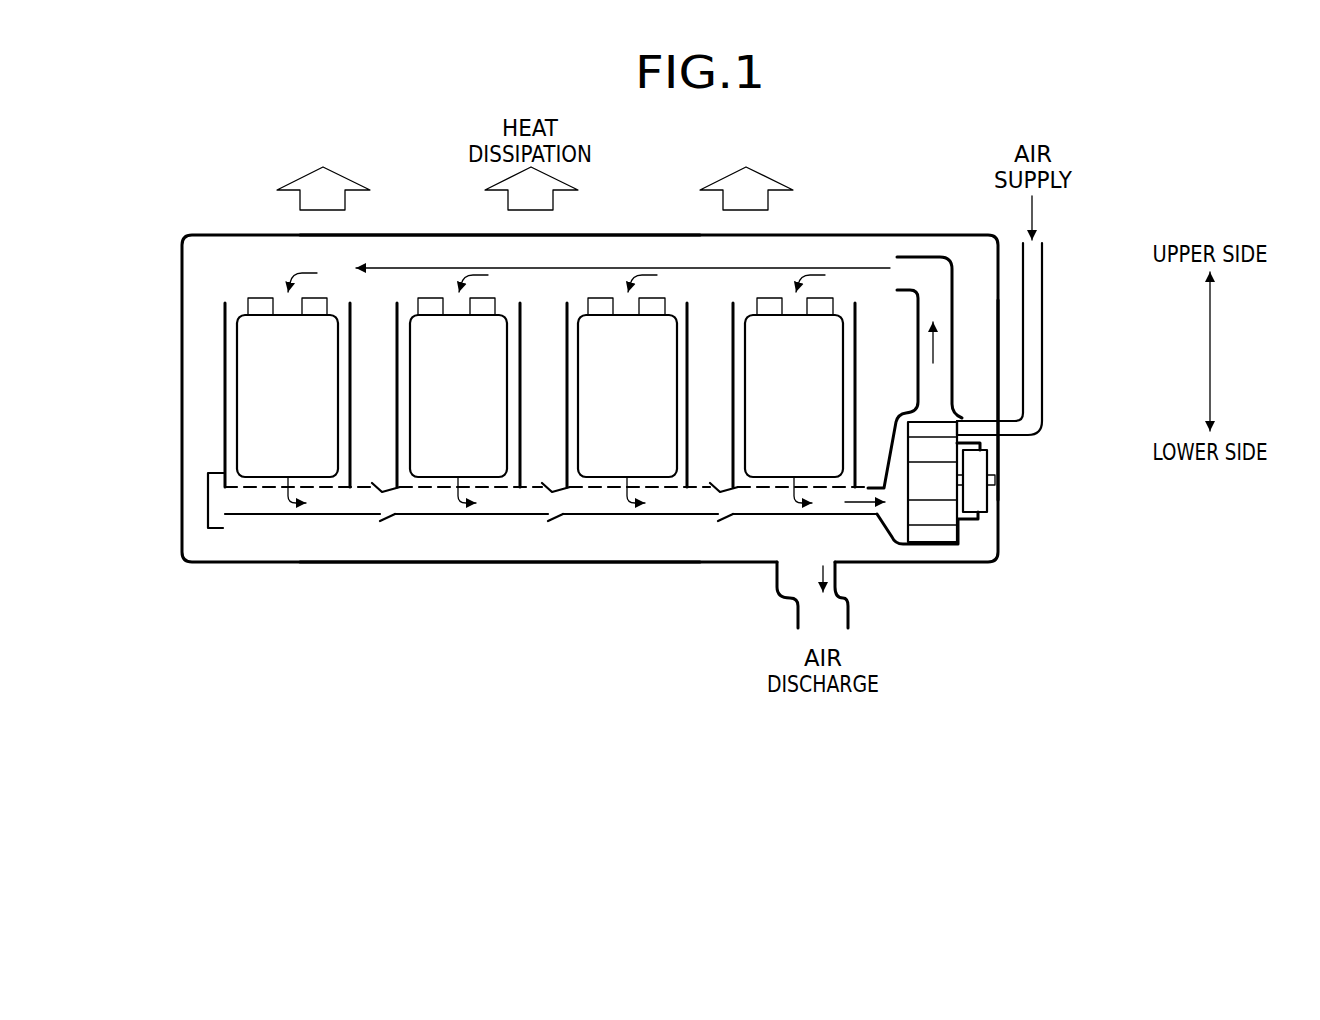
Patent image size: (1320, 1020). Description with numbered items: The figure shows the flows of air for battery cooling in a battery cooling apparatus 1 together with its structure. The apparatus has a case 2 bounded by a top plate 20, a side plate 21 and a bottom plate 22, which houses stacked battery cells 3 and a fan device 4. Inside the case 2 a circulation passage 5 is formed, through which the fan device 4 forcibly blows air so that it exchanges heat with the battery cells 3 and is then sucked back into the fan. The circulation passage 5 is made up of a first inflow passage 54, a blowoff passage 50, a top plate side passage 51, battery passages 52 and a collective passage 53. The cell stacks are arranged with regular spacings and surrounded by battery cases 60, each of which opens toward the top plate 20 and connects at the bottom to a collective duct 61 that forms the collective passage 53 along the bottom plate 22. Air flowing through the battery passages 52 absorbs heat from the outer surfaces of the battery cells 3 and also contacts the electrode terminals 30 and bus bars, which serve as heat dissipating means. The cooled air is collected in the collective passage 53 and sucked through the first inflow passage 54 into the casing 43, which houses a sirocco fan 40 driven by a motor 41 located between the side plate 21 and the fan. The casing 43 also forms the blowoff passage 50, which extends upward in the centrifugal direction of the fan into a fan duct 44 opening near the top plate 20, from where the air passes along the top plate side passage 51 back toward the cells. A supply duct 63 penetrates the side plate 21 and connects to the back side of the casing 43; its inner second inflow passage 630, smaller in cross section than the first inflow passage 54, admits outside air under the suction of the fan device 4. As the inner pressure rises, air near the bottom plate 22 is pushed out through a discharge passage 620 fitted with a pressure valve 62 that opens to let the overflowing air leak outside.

The battery cooling apparatus 1 is at (936, 188).
The case 2 is at (882, 230).
The battery cells 3 is at (236, 311).
The fan device 4 is at (986, 530).
The circulation passage 5 is at (677, 258).
The top plate 20 is at (632, 235).
The side plate 21 is at (1000, 447).
The bottom plate 22 is at (632, 561).
The electrode terminals 30 is at (418, 297).
The sirocco fan 40 is at (930, 534).
The motor 41 is at (982, 503).
The casing 43 is at (950, 548).
The fan duct 44 is at (952, 300).
The blowoff passage 50 is at (935, 398).
The top plate side passage 51 is at (453, 254).
The battery passages 52 is at (425, 412).
The collective passage 53 is at (517, 503).
The first inflow passage 54 is at (898, 521).
The battery cases 60 is at (397, 372).
The collective duct 61 is at (268, 515).
The pressure valve 62 is at (787, 603).
The supply duct 63 is at (1043, 361).
The discharge passage 620 is at (848, 600).
The second inflow passage 630 is at (965, 428).